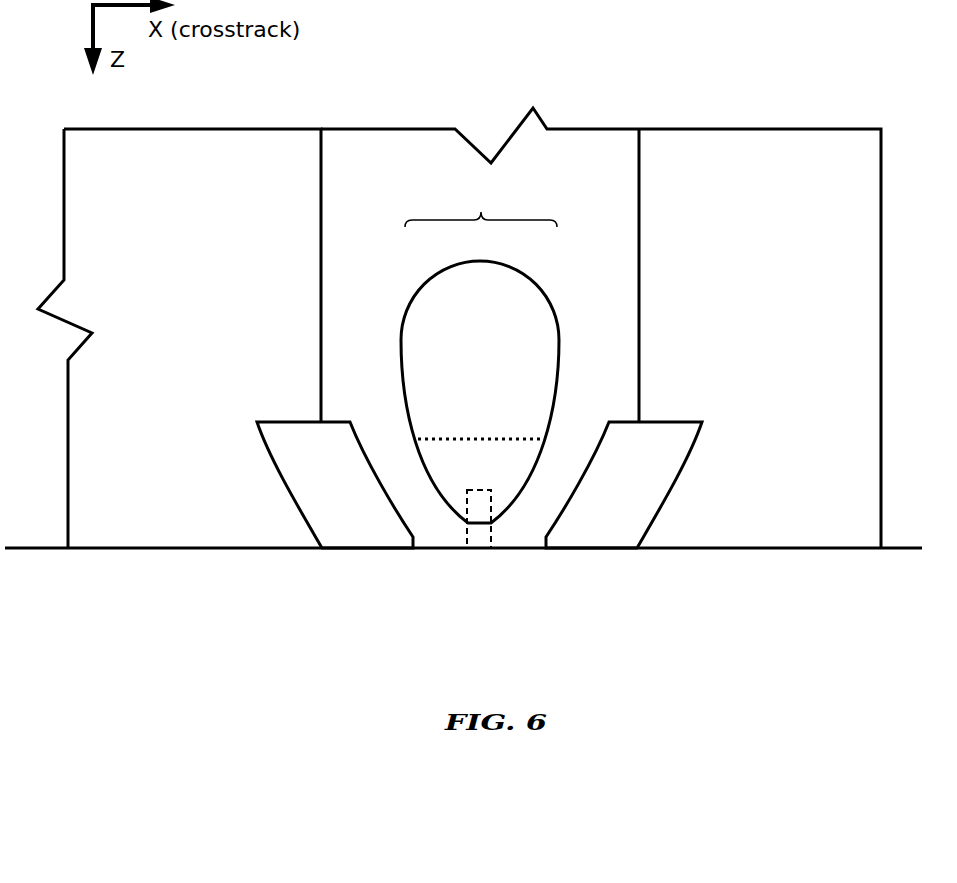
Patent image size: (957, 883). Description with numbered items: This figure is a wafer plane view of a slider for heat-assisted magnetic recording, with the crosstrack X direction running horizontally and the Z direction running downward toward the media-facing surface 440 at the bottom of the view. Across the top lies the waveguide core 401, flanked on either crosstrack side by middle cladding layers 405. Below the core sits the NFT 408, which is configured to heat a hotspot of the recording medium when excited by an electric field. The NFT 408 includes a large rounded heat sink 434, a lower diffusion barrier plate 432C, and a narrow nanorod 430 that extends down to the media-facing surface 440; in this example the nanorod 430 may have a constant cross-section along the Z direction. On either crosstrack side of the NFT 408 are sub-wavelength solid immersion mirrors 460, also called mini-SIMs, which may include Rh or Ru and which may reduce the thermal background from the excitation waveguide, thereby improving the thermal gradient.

The middle cladding layer 405 is at (214, 145).
The core 401 is at (370, 145).
The NFT 408 is at (481, 203).
The heat sink 434 is at (545, 330).
The diffusion barrier plate 432C is at (508, 472).
The nanorod 430 is at (467, 530).
The sub-wavelength solid immersion mirrors 460 is at (277, 421).
The air bearing surface 440 is at (800, 549).